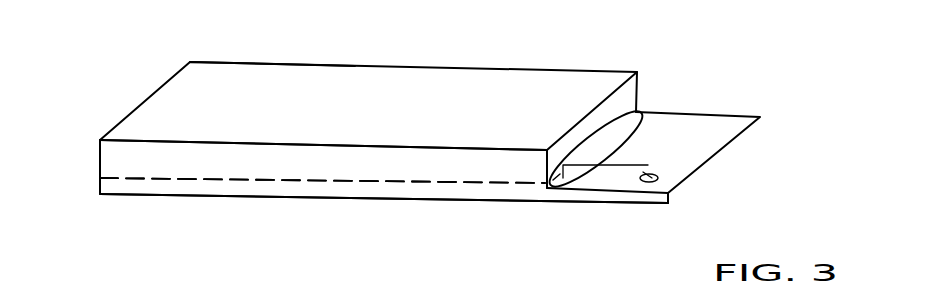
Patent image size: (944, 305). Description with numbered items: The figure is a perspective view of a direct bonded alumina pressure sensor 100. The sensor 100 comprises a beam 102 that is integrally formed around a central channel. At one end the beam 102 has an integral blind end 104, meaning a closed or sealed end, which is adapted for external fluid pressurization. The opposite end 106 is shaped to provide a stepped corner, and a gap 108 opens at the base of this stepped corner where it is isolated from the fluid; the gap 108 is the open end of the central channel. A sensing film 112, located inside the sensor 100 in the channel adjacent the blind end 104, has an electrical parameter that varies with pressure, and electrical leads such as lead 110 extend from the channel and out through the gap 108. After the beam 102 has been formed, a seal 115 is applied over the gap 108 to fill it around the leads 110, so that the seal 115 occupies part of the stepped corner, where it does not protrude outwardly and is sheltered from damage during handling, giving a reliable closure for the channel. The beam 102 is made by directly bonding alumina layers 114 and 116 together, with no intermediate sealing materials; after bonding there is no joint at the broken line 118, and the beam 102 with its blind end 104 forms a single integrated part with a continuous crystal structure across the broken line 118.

The pressure sensor 100 is at (793, 97).
The beam 102 is at (88, 127).
The blind end 104 is at (355, 52).
The opposite end 106 is at (787, 63).
The gap 108 is at (609, 141).
The lead 110 is at (645, 165).
The sensing film 112 is at (232, 129).
The alumina layer 114 is at (385, 160).
The seal 115 is at (613, 128).
The alumina layer 116 is at (330, 187).
The broken line 118 is at (182, 178).